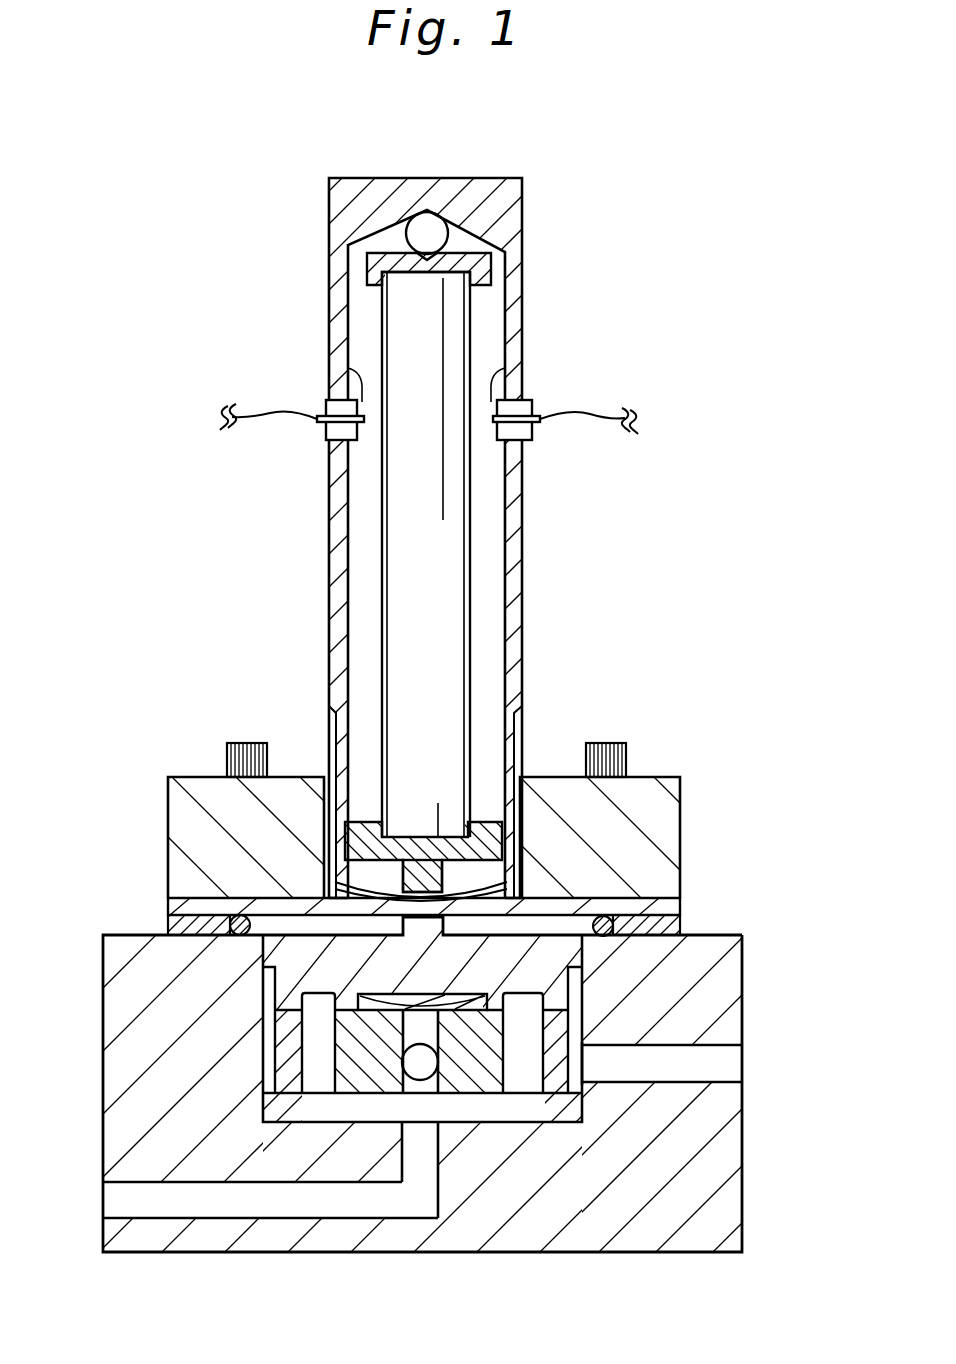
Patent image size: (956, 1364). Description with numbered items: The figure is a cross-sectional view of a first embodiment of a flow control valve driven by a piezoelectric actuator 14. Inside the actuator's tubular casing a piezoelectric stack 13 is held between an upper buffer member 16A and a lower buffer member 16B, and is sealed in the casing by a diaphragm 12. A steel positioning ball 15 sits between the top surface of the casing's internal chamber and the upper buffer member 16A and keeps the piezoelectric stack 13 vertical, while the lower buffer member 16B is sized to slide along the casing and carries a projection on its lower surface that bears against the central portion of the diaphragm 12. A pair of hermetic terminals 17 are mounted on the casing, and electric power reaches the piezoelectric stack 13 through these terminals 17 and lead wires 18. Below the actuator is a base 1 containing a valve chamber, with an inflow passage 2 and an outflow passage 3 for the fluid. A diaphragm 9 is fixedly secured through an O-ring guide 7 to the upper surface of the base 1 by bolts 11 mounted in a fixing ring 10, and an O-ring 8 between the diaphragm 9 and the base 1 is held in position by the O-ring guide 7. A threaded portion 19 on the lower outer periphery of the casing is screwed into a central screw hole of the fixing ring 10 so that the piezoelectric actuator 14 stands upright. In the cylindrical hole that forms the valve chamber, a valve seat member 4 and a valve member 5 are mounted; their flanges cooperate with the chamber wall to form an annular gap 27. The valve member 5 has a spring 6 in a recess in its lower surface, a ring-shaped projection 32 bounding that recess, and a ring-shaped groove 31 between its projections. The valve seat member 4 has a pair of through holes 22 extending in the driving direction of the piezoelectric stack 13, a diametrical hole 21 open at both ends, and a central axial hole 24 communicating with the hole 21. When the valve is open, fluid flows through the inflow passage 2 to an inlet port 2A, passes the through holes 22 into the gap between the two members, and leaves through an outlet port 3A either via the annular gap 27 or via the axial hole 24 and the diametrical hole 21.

The base 1 is at (113, 1017).
The inflow passage 2 is at (118, 1197).
The inlet port 2A is at (423, 1123).
The outflow passage 3 is at (735, 1066).
The outlet port 3A is at (583, 1063).
The valve seat member 4 is at (270, 1110).
The valve member 5 is at (265, 948).
The spring 6 is at (555, 895).
The O-ring guide 7 is at (683, 927).
The O-ring 8 is at (240, 897).
The diaphragm 9 is at (670, 910).
The fixing ring 10 is at (662, 803).
The bolts 11 is at (230, 742).
The diaphragm 12 is at (465, 828).
The piezoelectric stack 13 is at (450, 590).
The piezoelectric actuator 14 is at (522, 522).
The steel positioning ball 15 is at (437, 230).
The upper buffer member 16A is at (488, 272).
The lower buffer member 16B is at (485, 828).
The hermetic terminals 17 is at (322, 408).
The lead wires 18 is at (270, 414).
The threaded portion 19 is at (332, 712).
The hole 21 is at (432, 1070).
The through holes 22 is at (312, 1088).
The axial hole 24 is at (427, 1035).
The annular gap 27 is at (270, 1060).
The ring-shaped groove 31 is at (327, 1007).
The ring-shaped projection 32 is at (507, 1030).